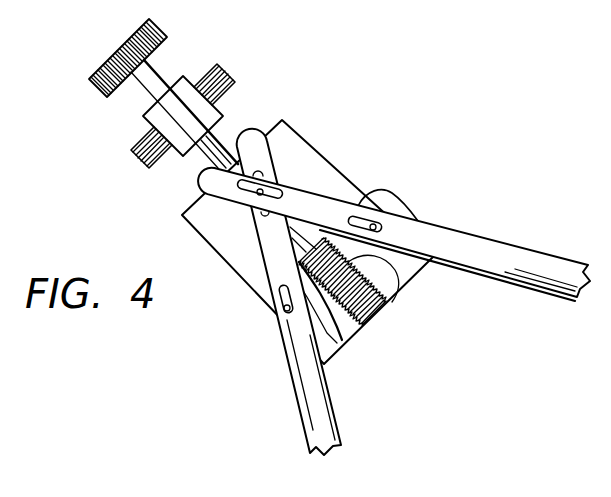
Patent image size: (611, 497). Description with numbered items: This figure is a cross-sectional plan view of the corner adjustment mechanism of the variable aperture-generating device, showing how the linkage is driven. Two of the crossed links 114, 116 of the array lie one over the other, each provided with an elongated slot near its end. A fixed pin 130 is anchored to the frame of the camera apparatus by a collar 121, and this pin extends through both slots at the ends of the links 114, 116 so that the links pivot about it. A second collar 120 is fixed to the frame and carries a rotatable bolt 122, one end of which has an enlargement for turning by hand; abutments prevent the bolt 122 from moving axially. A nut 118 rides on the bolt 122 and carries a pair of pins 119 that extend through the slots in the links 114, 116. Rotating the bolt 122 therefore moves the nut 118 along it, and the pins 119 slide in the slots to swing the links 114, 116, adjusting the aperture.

The link 114 is at (297, 361).
The link 116 is at (430, 238).
The nut 118 is at (376, 205).
The pins 119 is at (375, 226).
The collar 120 is at (140, 154).
The collar 121 is at (198, 220).
The rotatable bolt 122 is at (171, 82).
The fixed pin 130 is at (262, 189).